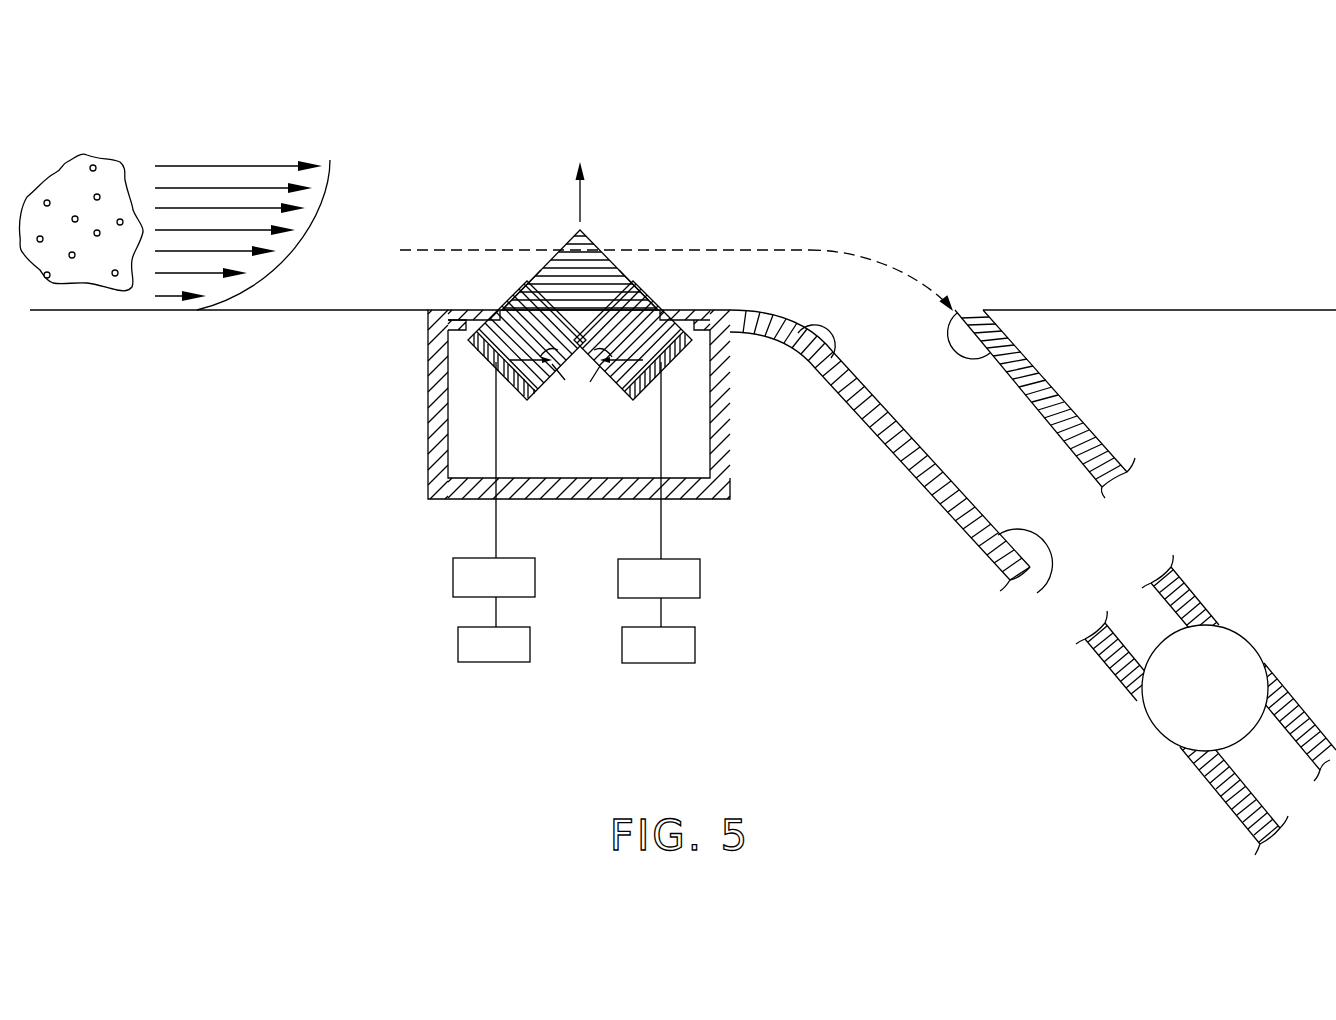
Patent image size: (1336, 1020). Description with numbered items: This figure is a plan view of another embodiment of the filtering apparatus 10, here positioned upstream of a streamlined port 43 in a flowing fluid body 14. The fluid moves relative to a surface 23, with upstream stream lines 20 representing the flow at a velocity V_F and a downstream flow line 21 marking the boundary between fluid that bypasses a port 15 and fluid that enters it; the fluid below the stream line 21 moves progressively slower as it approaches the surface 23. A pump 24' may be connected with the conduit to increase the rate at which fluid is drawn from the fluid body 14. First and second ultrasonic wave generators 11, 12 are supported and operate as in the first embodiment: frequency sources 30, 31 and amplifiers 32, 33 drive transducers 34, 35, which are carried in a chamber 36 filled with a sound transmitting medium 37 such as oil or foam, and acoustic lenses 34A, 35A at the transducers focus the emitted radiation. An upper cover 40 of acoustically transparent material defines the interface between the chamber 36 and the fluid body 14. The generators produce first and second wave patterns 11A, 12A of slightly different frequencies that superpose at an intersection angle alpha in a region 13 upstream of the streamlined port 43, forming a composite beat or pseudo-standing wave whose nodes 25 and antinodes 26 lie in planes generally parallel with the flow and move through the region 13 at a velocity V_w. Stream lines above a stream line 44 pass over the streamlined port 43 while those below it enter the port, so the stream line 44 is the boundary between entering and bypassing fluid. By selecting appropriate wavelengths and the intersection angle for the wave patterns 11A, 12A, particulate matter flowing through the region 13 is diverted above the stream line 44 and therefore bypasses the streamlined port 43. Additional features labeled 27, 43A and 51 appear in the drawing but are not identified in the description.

The filtering apparatus 10 is at (548, 381).
The first ultrasonic wave generator 11 is at (456, 492).
The second ultrasonic wave generator 12 is at (670, 492).
The first ultrasonic wave pattern 11A is at (503, 292).
The second ultrasonic wave pattern 12A is at (657, 292).
The region 13 is at (579, 224).
The fluid body 14 is at (883, 207).
The port 15 is at (1041, 404).
The upstream stream lines 20 is at (104, 125).
The downstream flow line 21 is at (272, 163).
The surface 23 is at (327, 310).
The pump 24' is at (1206, 705).
The nodes 25 is at (557, 277).
The antinodes 26 is at (593, 268).
The particle-laden fluid slug 27 is at (68, 160).
The frequency source 30 is at (458, 643).
The frequency source 31 is at (622, 643).
The amplifier 32 is at (453, 575).
The amplifier 33 is at (618, 576).
The transducer 34 is at (483, 362).
The acoustic lens 34A is at (545, 380).
The transducer 35 is at (668, 368).
The acoustic lens 35A is at (612, 380).
The chamber 36 is at (593, 500).
The sound transmitting medium 37 is at (466, 466).
The upper cover 40 is at (467, 310).
The streamlined port 43 is at (815, 370).
The chute outlet end 43A is at (1040, 575).
The stream line 44 is at (420, 251).
The ramp surface 51 is at (1020, 452).